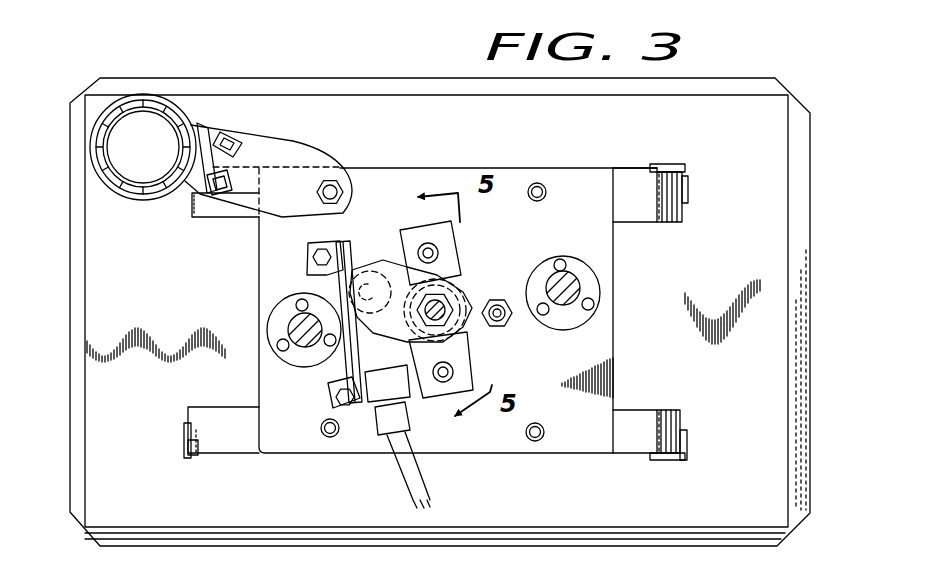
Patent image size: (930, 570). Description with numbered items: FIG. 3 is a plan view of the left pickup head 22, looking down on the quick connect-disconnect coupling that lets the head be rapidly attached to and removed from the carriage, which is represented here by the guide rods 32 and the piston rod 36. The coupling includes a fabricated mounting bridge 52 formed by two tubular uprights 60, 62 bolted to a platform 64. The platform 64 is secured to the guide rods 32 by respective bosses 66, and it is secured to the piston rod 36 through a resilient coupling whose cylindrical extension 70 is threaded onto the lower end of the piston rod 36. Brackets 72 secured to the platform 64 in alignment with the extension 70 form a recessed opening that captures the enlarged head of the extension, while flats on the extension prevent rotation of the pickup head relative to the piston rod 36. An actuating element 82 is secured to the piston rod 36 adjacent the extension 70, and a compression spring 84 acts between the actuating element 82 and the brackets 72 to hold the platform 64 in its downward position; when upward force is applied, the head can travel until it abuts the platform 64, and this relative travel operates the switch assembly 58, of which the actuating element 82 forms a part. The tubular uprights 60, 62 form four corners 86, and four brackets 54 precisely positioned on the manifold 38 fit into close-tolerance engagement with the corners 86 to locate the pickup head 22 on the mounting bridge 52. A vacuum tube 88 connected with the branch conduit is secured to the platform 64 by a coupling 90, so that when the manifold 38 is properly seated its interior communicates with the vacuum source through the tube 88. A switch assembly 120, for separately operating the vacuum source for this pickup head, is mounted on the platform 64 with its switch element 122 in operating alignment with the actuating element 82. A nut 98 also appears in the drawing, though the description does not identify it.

The pickup head 22 is at (294, 66).
The guide rods 32 is at (580, 285).
The piston rod 36 is at (448, 305).
The manifold 38 is at (440, 312).
The mounting bridge 52 is at (235, 458).
The brackets 54 is at (657, 165).
The switch assembly 58 is at (330, 295).
The tubular upright 60 is at (647, 222).
The tubular upright 62 is at (640, 410).
The platform 64 is at (613, 358).
The bosses 66 is at (590, 320).
The cylindrical extension 70 is at (428, 291).
The brackets 72 is at (447, 238).
The actuating element 82 is at (444, 268).
The compression spring 84 is at (349, 324).
The corners 86 is at (688, 176).
The tube 88 is at (100, 157).
The coupling 90 is at (205, 128).
The nut 98 is at (517, 325).
The switch assembly 120 is at (382, 388).
The switch element 122 is at (362, 272).